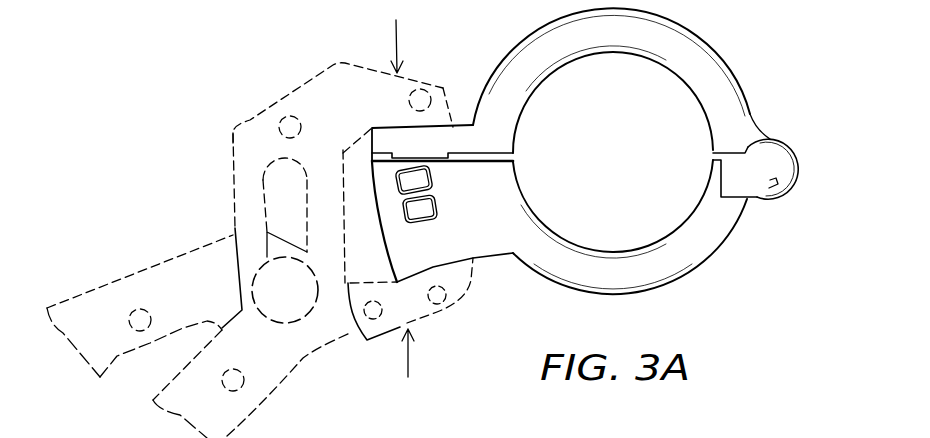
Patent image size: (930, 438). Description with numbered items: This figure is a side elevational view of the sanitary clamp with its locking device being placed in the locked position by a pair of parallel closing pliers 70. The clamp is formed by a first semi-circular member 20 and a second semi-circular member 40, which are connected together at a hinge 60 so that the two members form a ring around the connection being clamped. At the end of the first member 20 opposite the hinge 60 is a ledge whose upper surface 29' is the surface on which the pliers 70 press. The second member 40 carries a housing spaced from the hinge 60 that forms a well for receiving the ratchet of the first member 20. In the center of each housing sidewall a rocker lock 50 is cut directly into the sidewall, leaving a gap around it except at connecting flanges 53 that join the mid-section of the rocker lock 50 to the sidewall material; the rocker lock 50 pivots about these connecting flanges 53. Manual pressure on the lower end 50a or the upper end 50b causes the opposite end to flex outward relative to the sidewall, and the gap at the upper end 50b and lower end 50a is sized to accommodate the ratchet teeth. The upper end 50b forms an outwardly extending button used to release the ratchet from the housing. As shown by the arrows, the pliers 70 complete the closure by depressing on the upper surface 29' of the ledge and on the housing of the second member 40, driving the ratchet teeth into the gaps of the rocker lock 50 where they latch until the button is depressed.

The first semi-circular member 20 is at (717, 52).
The second semi-circular member 40 is at (698, 257).
The hinge 60 is at (779, 136).
The rocker lock 50 is at (402, 198).
The lower end of rocker lock 50a is at (428, 222).
The upper end of rocker lock 50b is at (407, 180).
The connecting flanges 53 is at (432, 188).
The parallel closing pliers 70 is at (233, 225).
The upper surface of the ledge 29' is at (437, 69).